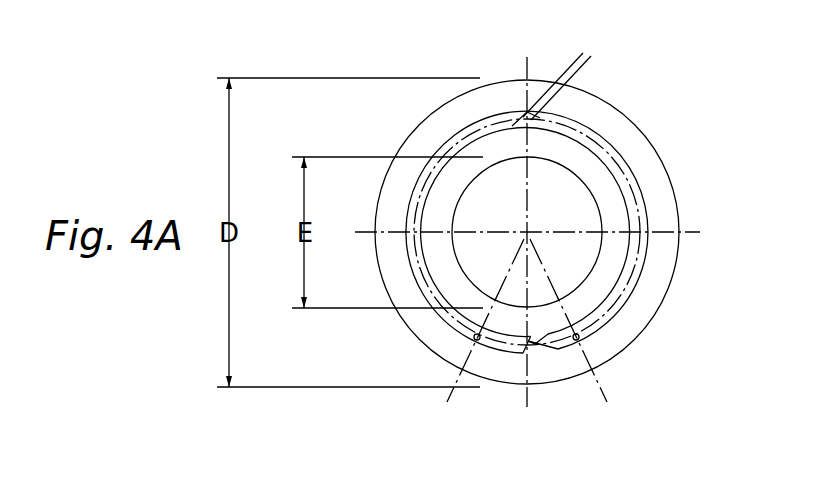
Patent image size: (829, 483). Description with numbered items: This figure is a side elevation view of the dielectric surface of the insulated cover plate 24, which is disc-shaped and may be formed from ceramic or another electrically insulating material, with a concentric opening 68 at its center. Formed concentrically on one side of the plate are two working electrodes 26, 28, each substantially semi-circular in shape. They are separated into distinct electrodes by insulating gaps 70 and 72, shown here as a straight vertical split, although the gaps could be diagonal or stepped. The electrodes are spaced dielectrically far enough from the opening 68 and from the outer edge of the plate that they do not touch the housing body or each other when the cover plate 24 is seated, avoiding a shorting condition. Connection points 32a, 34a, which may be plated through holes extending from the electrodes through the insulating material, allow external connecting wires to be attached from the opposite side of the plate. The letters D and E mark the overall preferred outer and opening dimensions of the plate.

The insulated cover plate 24 is at (668, 336).
The working electrode 26 is at (405, 263).
The working electrode 28 is at (640, 283).
The connection point 32a is at (580, 337).
The connection point 34a is at (474, 337).
The concentric opening 68 is at (567, 187).
The insulating gap 70 is at (526, 338).
The insulating gap 72 is at (530, 115).